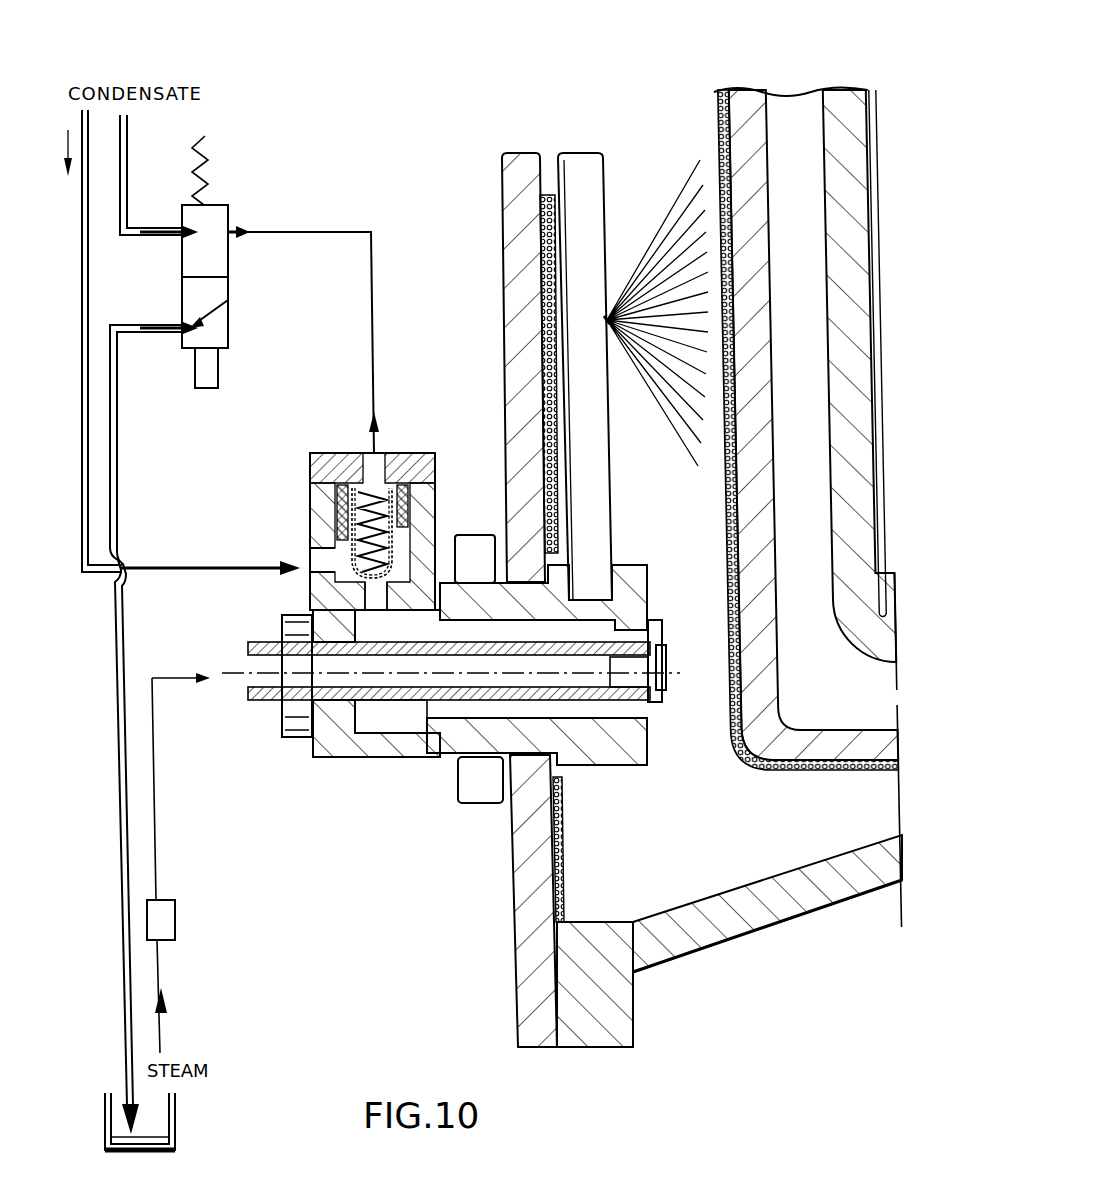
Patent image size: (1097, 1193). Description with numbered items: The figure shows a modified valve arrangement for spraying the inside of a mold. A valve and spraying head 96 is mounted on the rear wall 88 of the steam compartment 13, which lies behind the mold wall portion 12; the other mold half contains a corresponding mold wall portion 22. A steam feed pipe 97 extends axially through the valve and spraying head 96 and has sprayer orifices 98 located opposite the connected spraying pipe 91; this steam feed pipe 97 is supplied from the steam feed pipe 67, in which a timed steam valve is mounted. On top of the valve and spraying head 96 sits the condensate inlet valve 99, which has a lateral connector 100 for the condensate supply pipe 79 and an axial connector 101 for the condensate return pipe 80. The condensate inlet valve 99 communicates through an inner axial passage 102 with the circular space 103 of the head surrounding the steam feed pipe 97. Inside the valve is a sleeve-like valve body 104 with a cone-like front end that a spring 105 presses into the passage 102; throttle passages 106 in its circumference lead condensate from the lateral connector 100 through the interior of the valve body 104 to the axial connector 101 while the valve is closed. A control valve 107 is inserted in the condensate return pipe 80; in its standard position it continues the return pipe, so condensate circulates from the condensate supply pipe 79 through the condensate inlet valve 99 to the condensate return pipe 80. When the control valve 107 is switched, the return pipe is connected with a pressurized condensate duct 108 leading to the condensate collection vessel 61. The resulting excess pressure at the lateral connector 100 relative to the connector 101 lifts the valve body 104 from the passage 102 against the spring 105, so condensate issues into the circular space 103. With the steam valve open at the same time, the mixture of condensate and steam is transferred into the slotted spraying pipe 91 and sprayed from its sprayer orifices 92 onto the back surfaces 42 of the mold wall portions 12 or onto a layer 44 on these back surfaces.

The mold wall portion 12 is at (738, 92).
The steam compartment 13 is at (652, 893).
The mold wall portion 22 is at (845, 112).
The back surface 42 is at (715, 152).
The layer 44 is at (718, 98).
The condensate collection vessel 61 is at (143, 1132).
The steam feed pipe 67 is at (155, 812).
The condensate supply pipe 79 is at (82, 270).
The condensate return pipe 80 is at (127, 195).
The rear wall 88 is at (507, 195).
The spraying pipe 91 is at (578, 195).
The sprayer orifices 92 is at (607, 320).
The valve and spraying head 96 is at (470, 757).
The steam feed pipe 97 is at (314, 723).
The sprayer orifices 98 is at (590, 645).
The condensate inlet valve 99 is at (364, 491).
The lateral connector 100 is at (312, 556).
The axial connector 101 is at (380, 452).
The inner axial passage 102 is at (368, 587).
The circular space 103 is at (412, 707).
The sleeve-like valve body 104 is at (427, 505).
The spring 105 is at (343, 468).
The throttle passages 106 is at (397, 557).
The control valve 107 is at (245, 199).
The pressurized condensate duct 108 is at (121, 800).